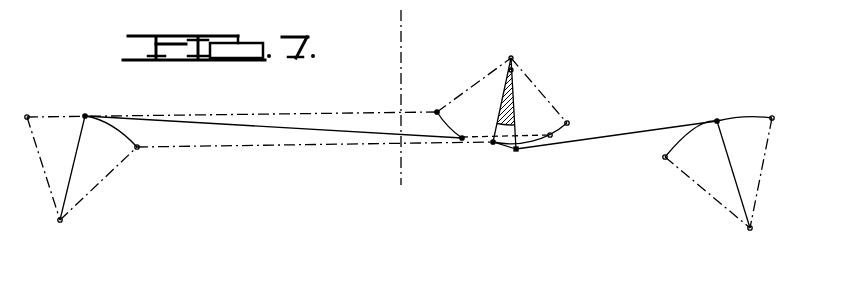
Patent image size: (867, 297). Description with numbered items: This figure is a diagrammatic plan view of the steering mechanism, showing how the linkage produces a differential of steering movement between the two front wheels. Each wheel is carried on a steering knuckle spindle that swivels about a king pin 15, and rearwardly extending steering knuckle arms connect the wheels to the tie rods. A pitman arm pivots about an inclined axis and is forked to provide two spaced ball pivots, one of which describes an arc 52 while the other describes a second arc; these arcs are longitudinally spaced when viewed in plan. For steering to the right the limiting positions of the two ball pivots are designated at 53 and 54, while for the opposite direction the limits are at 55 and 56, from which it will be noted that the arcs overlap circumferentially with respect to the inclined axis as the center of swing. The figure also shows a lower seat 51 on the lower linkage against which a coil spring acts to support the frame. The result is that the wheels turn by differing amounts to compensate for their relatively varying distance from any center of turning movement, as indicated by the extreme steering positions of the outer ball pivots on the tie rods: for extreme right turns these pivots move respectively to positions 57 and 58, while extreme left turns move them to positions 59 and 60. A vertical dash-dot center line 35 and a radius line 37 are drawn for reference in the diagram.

The king pin 15 is at (60, 221).
The center line 35 is at (401, 18).
The radius line 37 is at (530, 80).
The lower seat 51 is at (505, 151).
The arc 52 is at (452, 128).
The arc / limiting position 53 is at (567, 122).
The limiting position 54 is at (551, 137).
The limiting position 55 is at (460, 142).
The limiting position 56 is at (437, 112).
The extreme right-turn position 57 is at (772, 117).
The extreme right-turn position 58 is at (137, 148).
The extreme left-turn position 59 is at (665, 158).
The extreme left-turn position 60 is at (27, 116).